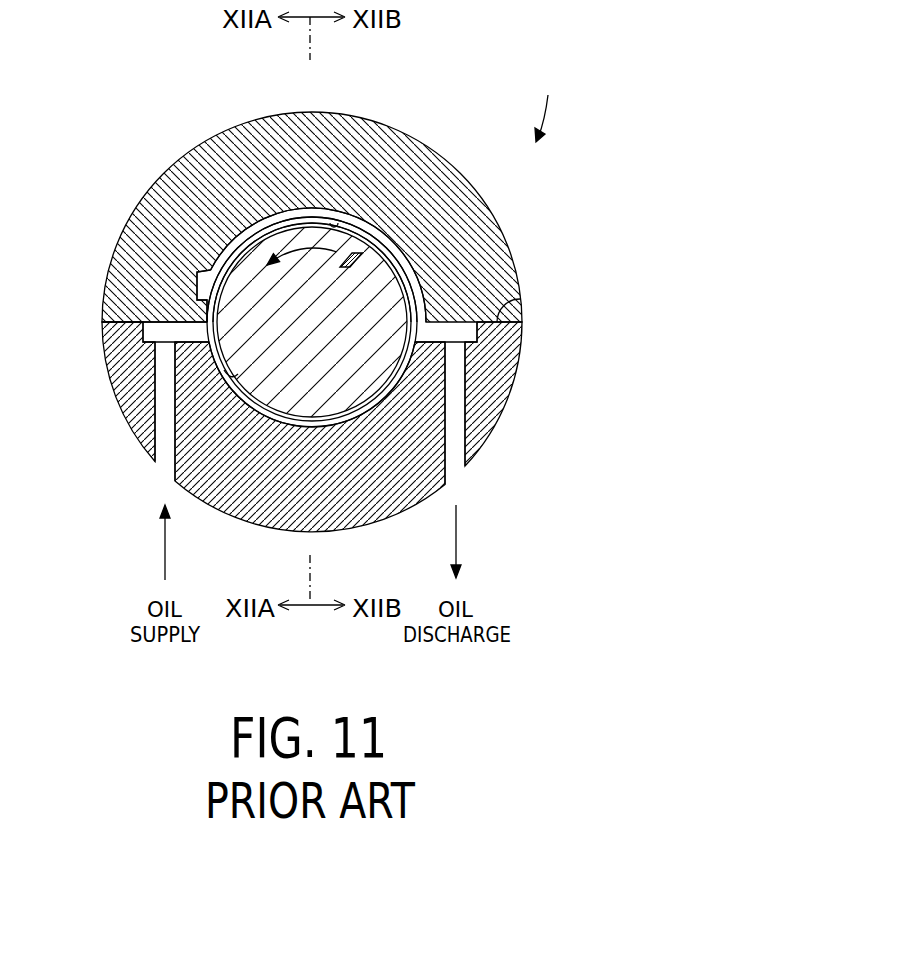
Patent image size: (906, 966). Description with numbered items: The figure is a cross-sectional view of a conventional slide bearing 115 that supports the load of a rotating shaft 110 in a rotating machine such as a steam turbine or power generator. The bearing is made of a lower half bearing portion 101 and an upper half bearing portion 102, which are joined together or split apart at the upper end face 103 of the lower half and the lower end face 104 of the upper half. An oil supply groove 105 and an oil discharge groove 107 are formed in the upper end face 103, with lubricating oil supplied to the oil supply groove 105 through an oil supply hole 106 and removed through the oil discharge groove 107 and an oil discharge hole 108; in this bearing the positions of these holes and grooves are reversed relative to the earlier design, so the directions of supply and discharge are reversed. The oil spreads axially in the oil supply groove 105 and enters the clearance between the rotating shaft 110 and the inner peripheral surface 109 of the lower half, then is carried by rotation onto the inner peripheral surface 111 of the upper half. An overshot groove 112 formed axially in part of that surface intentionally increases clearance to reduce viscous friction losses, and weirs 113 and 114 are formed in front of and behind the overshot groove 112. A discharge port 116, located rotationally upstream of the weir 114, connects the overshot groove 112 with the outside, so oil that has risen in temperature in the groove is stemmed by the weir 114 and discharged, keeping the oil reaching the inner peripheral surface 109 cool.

The lower half bearing portion 101 is at (387, 492).
The upper half bearing portion 102 is at (397, 157).
The upper end face 103 is at (505, 300).
The lower end face 104 is at (118, 322).
The oil supply groove 105 is at (147, 332).
The oil supply hole 106 is at (162, 423).
The oil discharge groove 107 is at (462, 336).
The oil discharge hole 108 is at (455, 410).
The inner peripheral surface 109 is at (227, 392).
The rotating shaft 110 is at (375, 270).
The inner peripheral surface 111 is at (334, 226).
The overshot groove 112 is at (263, 210).
The weir 113 is at (412, 312).
The weir 114 is at (215, 312).
The slide bearing 115 is at (547, 103).
The discharge port 116 is at (197, 263).